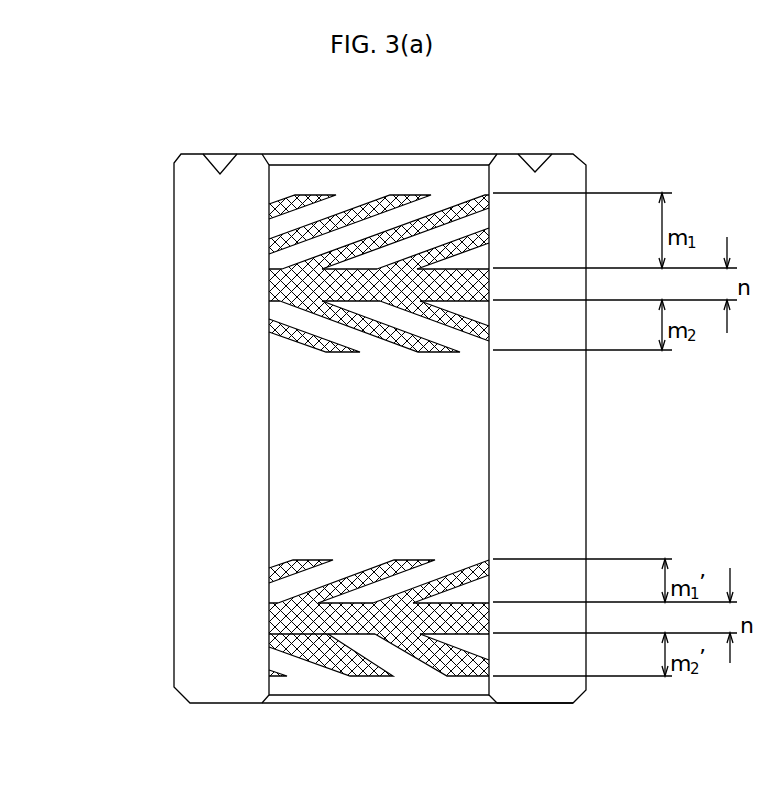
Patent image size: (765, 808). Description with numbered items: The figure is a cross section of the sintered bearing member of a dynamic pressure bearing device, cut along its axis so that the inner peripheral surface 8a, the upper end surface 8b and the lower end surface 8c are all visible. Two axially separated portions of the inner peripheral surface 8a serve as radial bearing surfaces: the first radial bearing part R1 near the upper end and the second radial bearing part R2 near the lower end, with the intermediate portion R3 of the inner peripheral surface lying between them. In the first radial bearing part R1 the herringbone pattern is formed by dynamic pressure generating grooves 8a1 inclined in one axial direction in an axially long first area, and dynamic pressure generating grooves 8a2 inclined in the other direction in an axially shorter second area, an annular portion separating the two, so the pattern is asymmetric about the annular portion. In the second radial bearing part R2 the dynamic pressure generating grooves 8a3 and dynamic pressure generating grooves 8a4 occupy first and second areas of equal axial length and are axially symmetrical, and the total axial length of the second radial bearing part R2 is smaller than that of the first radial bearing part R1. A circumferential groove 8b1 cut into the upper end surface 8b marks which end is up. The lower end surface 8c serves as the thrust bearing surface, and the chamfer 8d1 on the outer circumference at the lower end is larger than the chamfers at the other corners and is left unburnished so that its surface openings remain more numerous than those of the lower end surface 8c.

The elastic sealing member 8a is at (489, 432).
The dynamic pressure generating grooves 8a1 is at (327, 207).
The dynamic pressure generating grooves 8a2 is at (348, 333).
The dynamic pressure generating grooves 8a3 is at (332, 573).
The dynamic pressure generating grooves 8a4 is at (388, 663).
The upper end surface 8b is at (560, 153).
The circumferential groove 8b1 is at (212, 155).
The lower end surface 8c is at (534, 704).
The chamfer 8d1 is at (188, 698).
The first radial bearing part R1 is at (269, 265).
The second radial bearing part R2 is at (269, 626).
The intermediate region R3 is at (269, 427).